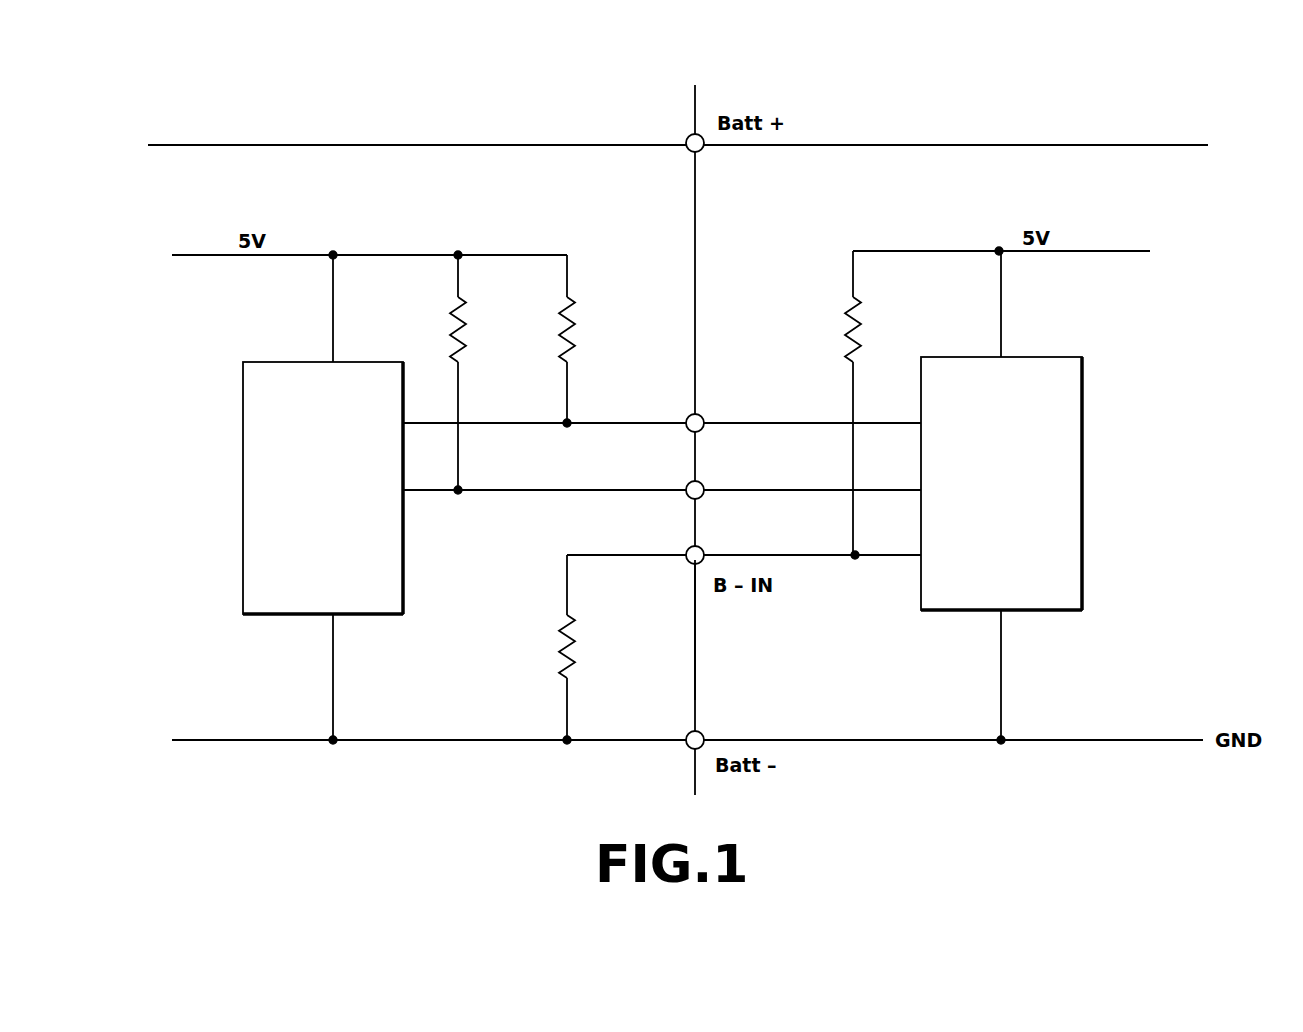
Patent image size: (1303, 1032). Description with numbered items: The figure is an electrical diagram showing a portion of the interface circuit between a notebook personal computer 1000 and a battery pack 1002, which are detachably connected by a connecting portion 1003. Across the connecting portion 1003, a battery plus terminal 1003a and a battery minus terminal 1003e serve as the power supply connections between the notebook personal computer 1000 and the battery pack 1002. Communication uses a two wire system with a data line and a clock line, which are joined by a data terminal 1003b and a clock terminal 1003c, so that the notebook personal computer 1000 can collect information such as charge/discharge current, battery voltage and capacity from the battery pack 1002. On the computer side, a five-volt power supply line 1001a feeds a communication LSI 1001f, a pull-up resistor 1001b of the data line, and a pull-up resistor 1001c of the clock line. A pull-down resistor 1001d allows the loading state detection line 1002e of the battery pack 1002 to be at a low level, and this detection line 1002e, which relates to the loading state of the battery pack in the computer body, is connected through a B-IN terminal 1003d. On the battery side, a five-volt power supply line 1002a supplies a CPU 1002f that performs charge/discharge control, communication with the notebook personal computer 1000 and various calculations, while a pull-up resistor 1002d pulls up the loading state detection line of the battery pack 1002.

The notebook personal computer 1000 is at (338, 132).
The 5V power supply line 1001a is at (208, 254).
The pull-up resistor Rn1 1001b is at (580, 300).
The pull-up resistor Rn2 1001c is at (450, 325).
The pull-down resistor Rn3 1001d is at (557, 645).
The communication LSI 1001f is at (287, 618).
The battery pack 1002 is at (928, 128).
The 5V power supply line 1002a is at (1084, 250).
The pull-up resistor Rp3 1002d is at (866, 312).
The loading state detection line 1002e is at (730, 555).
The CPU 1002f is at (1040, 616).
The connecting portion 1003 is at (790, 553).
The battery plus terminal 1003a is at (686, 138).
The data terminal 1003b is at (703, 418).
The clock terminal 1003c is at (703, 485).
The B-IN terminal 1003d is at (686, 552).
The battery minus terminal 1003e is at (703, 735).